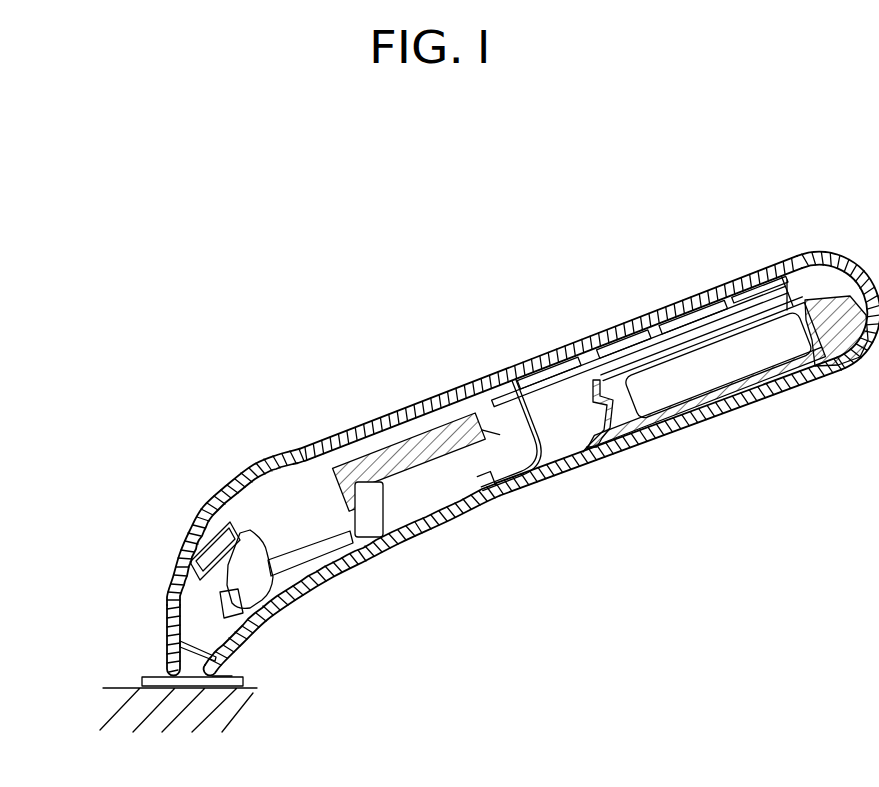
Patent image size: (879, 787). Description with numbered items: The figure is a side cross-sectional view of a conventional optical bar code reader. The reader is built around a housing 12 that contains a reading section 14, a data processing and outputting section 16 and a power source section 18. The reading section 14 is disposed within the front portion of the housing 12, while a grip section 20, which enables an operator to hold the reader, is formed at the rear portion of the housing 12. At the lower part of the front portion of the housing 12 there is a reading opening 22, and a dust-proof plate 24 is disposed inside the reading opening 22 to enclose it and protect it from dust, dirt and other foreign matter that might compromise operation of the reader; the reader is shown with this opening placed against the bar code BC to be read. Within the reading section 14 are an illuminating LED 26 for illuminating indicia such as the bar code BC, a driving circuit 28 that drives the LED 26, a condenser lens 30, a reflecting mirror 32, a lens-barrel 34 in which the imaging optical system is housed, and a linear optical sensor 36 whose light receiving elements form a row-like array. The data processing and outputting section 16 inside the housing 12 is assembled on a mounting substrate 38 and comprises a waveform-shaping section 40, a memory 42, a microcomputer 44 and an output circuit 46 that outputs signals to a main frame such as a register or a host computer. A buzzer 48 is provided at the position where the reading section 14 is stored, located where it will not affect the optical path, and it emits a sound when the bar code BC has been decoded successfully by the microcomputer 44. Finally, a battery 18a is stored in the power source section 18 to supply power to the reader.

The housing 12 is at (455, 519).
The reading section 14 is at (189, 581).
The data processing and outputting section 16 is at (582, 390).
The power source section 18 is at (625, 430).
The battery 18a is at (703, 392).
The grip section 20 is at (633, 318).
The reading opening 22 is at (197, 662).
The dust-proof plate 24 is at (188, 645).
The illuminating LED 26 is at (242, 600).
The driving circuit 28 is at (270, 585).
The condenser lens 30 is at (250, 655).
The reflecting mirror 32 is at (197, 543).
The lens-barrel 34 is at (388, 540).
The linear optical sensor 36 is at (493, 500).
The mounting substrate 38 is at (500, 397).
The waveform-shaping section 40 is at (550, 368).
The memory 42 is at (612, 337).
The microcomputer 44 is at (673, 327).
The output circuit 46 is at (715, 292).
The buzzer 48 is at (330, 548).
The bar code BC is at (140, 678).